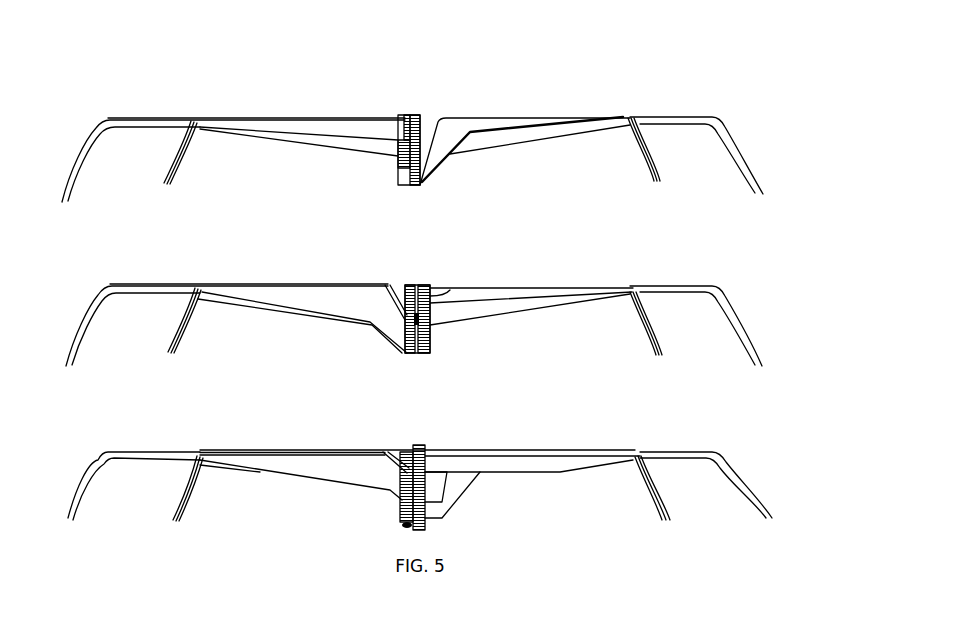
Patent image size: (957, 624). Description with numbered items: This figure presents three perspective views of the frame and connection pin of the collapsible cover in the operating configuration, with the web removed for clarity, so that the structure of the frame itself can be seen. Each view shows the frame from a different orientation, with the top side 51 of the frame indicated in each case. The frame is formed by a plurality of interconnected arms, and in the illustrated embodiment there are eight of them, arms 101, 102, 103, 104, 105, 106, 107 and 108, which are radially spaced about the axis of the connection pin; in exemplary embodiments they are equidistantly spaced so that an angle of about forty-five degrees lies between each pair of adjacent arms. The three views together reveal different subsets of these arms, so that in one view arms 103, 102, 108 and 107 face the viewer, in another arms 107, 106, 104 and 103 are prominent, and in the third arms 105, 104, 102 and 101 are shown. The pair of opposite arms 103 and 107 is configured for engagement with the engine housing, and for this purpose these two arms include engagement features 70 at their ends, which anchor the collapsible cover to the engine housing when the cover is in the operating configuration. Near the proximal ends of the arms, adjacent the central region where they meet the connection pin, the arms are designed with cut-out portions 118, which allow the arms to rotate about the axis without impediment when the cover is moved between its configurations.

The top side 51 is at (363, 107).
The engagement features 70 is at (66, 199).
The arm 101 is at (422, 138).
The arm 102 is at (307, 130).
The arm 103 is at (130, 120).
The arm 104 is at (540, 295).
The arm 105 is at (423, 316).
The arm 106 is at (307, 296).
The arm 107 is at (670, 120).
The arm 108 is at (525, 120).
The cut-out portions 118 is at (427, 112).